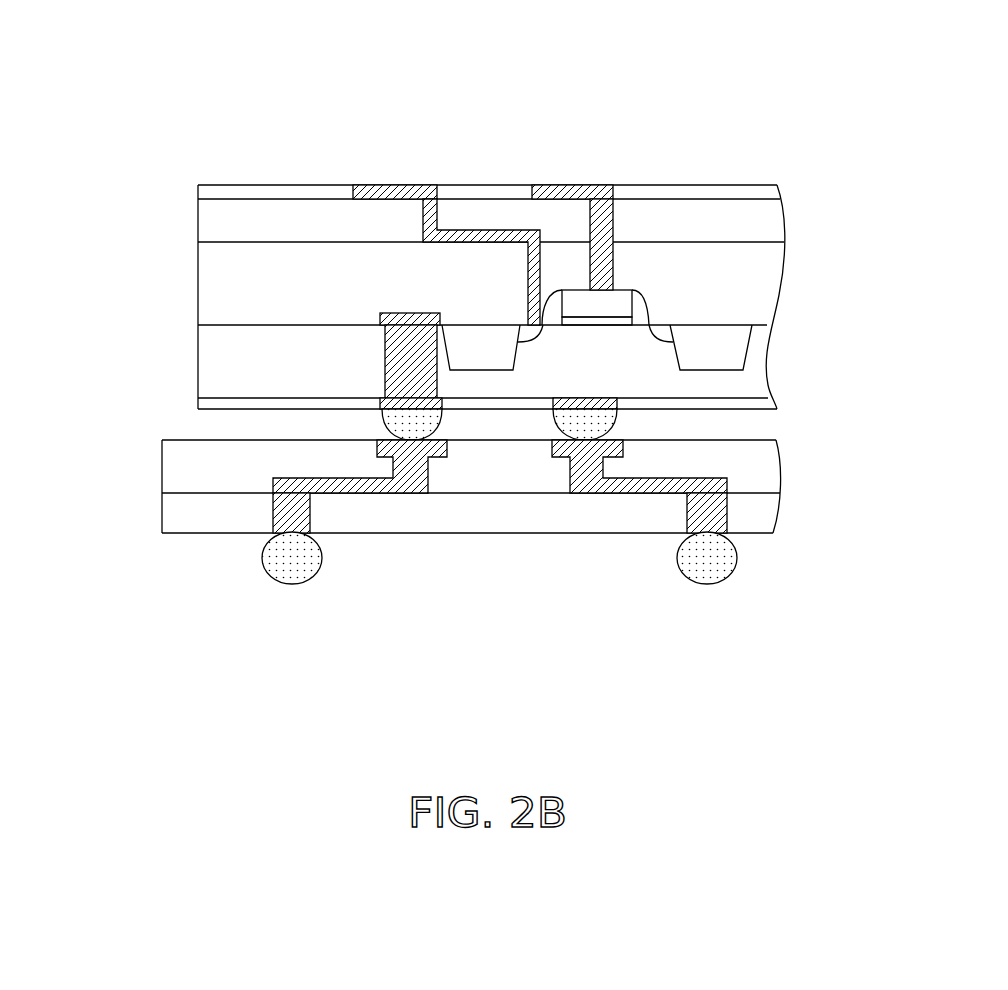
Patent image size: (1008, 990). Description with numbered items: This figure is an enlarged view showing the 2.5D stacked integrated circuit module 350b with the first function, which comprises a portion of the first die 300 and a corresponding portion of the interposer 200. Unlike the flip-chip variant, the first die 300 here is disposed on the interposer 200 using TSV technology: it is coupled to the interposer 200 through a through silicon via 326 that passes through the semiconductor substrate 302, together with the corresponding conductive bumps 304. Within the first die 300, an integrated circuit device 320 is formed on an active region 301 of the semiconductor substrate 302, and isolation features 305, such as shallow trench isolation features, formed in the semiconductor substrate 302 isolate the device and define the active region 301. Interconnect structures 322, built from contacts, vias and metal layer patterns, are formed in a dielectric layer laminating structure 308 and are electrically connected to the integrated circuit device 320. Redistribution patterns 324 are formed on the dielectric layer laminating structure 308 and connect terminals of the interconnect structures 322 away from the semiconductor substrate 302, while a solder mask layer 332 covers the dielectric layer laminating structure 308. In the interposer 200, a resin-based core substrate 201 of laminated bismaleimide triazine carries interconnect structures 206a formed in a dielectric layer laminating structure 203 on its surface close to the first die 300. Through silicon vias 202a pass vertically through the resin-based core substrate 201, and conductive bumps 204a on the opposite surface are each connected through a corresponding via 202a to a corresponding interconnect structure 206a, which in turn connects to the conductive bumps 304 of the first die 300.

The 2.5D stacked integrated circuit module 350b is at (128, 73).
The first die 300 is at (160, 150).
The solder mask layer 332 is at (207, 193).
The redistribution patterns 324 is at (392, 193).
The interconnect structures 322 is at (613, 213).
The integrated circuit device 320 is at (647, 291).
The active region 301 is at (661, 322).
The dielectric layer laminating structure 308 is at (165, 325).
The semiconductor substrate 302 is at (617, 374).
The isolation features 305 is at (717, 346).
The through silicon via 326 is at (397, 360).
The conductive bumps 304 is at (413, 423).
The interposer 200 is at (152, 547).
The dielectric layer laminating structure 203 is at (180, 470).
The resin-based core substrate 201 is at (180, 515).
The through silicon vias 202a is at (283, 515).
The conductive bumps 204a is at (293, 565).
The interconnect structures 206a is at (417, 467).